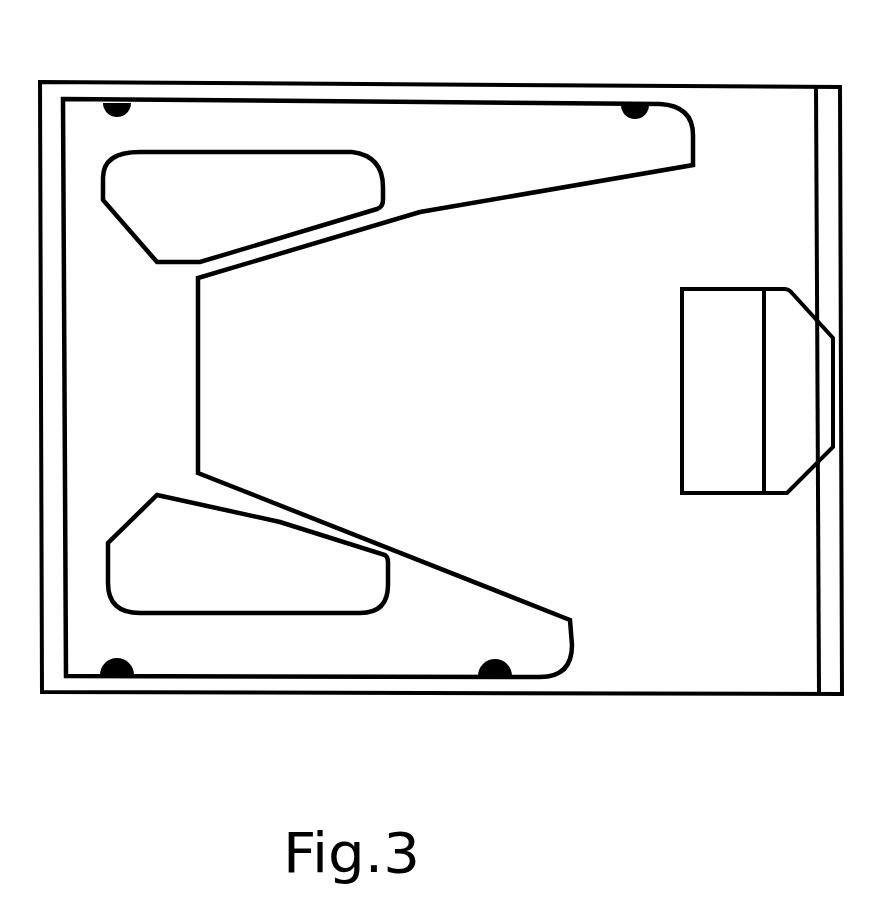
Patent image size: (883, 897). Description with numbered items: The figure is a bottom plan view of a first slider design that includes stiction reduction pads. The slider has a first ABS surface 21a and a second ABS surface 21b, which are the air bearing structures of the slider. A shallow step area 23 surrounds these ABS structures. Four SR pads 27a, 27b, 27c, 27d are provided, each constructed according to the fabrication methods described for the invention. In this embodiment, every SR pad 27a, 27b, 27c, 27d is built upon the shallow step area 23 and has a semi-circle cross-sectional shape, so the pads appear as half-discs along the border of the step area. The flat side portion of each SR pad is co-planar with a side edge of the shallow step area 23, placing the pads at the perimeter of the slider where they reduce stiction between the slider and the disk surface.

The shallow step area 23 is at (378, 388).
The first ABS surface 21a is at (243, 207).
The second ABS surface 21b is at (248, 554).
The SR pad 27a is at (158, 58).
The SR pad 27b is at (673, 58).
The SR pad 27c is at (504, 684).
The SR pad 27d is at (110, 690).